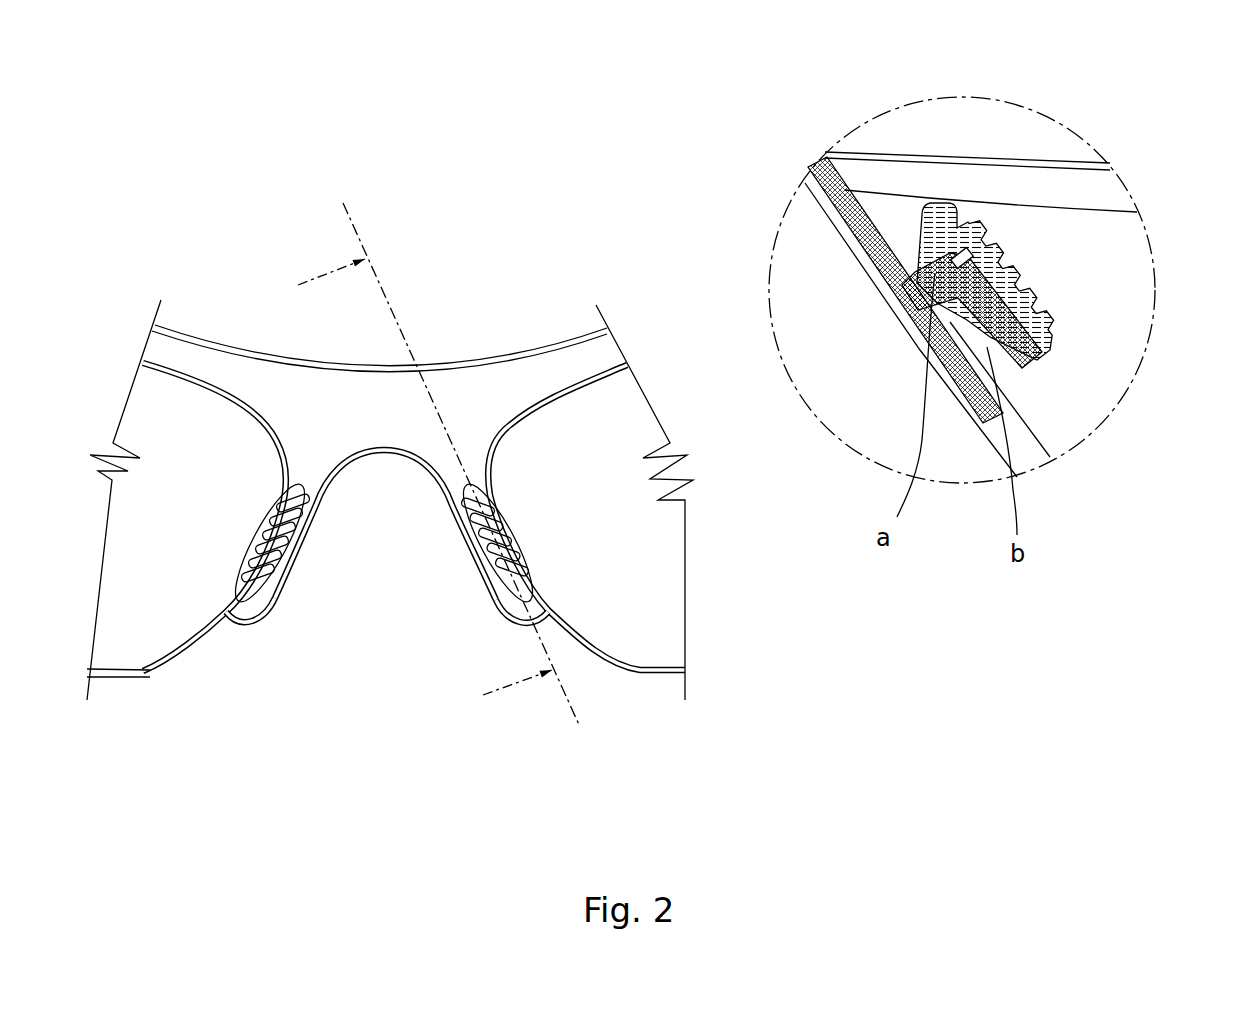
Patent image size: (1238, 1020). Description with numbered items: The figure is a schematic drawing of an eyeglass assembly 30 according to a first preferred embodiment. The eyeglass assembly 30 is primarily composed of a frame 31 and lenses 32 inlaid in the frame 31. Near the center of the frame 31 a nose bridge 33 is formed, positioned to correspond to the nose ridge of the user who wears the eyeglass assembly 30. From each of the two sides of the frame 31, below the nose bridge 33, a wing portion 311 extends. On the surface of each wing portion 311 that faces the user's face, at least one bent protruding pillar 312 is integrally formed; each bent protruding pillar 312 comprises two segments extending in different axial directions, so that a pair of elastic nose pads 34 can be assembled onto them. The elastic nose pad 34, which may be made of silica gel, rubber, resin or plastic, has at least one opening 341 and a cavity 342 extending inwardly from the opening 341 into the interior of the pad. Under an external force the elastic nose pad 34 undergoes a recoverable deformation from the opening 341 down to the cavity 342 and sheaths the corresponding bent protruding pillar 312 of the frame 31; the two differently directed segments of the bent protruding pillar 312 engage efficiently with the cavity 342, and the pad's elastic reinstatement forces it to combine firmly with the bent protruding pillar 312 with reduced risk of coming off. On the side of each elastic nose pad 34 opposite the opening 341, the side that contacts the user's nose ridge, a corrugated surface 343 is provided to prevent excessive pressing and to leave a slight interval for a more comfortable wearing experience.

The eyeglass assembly 30 is at (390, 462).
The frame 31 is at (552, 367).
The lenses 32 is at (140, 647).
The nose bridge 33 is at (378, 440).
The wing portion 311 is at (520, 612).
The bent protruding pillar 312 is at (1025, 365).
The elastic nose pad 34 is at (989, 249).
The opening 341 is at (880, 300).
The cavity 342 is at (1000, 243).
The corrugated surface 343 is at (1030, 295).